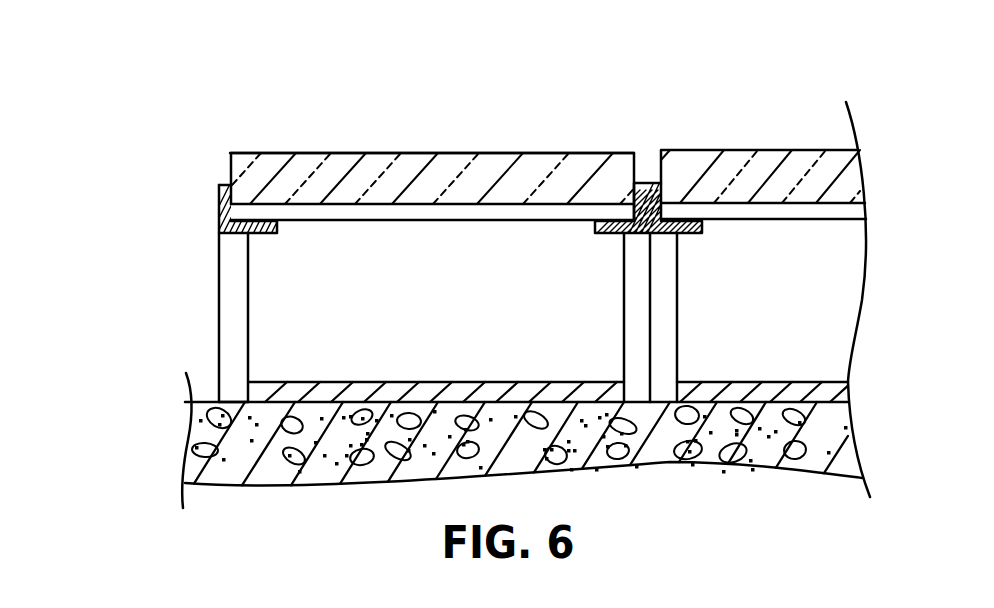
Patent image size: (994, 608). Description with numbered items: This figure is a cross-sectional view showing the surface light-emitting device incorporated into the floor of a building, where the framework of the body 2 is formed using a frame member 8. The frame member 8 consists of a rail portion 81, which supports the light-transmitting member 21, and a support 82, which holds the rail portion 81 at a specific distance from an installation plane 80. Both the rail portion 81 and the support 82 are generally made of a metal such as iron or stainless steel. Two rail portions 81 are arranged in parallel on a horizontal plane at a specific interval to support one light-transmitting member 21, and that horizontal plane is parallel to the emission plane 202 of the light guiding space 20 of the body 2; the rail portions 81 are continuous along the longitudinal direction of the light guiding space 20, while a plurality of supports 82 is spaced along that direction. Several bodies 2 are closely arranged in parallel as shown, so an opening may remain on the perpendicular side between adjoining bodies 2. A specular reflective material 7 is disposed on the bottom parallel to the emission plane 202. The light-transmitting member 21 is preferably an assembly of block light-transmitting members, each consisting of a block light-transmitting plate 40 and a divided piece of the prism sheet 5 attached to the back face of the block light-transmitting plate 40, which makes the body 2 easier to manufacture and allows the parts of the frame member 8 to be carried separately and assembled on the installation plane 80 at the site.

The body 2 is at (382, 120).
The light guiding space 20 is at (322, 252).
The emission plane 202 is at (365, 200).
The light-transmitting member 21 is at (508, 133).
The prism sheet 5 is at (551, 210).
The block light-transmitting plate 40 is at (578, 166).
The frame member 8 is at (401, 247).
The rail portion 81 is at (218, 186).
The support 82 is at (232, 326).
The installation plane 80 is at (210, 401).
The specular reflective material 7 is at (396, 383).